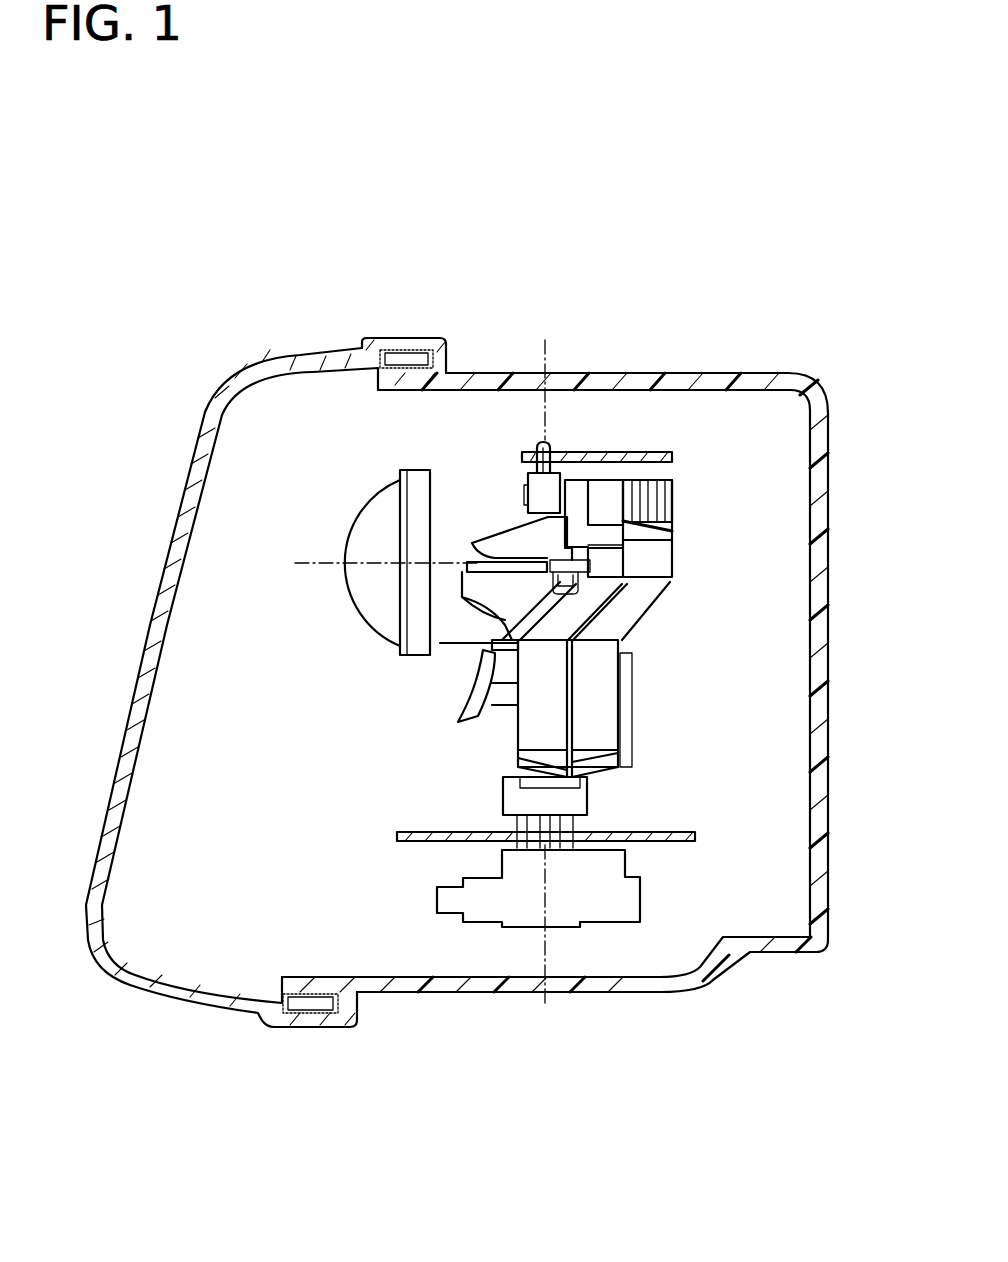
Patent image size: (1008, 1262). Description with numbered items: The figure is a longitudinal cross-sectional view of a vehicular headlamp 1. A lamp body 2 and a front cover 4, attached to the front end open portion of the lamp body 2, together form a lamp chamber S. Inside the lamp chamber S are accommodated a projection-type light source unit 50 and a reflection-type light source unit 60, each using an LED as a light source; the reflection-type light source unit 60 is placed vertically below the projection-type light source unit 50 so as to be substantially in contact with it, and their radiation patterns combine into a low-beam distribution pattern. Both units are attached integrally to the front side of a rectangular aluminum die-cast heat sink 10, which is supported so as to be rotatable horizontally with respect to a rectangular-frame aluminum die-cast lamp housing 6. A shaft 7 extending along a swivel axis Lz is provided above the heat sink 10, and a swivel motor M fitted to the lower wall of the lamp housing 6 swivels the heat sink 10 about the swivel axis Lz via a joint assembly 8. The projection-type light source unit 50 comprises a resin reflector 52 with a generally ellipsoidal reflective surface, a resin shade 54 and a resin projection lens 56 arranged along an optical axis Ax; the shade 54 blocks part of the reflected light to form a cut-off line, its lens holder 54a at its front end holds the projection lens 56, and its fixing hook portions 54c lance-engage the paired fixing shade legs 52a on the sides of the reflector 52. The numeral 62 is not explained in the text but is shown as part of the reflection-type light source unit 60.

The vehicular headlamp 1 is at (580, 262).
The lamp body 2 is at (798, 364).
The front cover 4 is at (236, 364).
The lamp housing 6 is at (595, 452).
The shaft 7 is at (554, 436).
The joint assembly 8 is at (580, 800).
The heat sink 10 is at (648, 640).
The projection-type light source unit 50 is at (463, 283).
The reflector 52 is at (510, 543).
The fixing shade leg 52a is at (590, 547).
The shade 54 is at (447, 575).
The lens holder 54a is at (418, 653).
The fixing hook portion 54c is at (590, 592).
The projection lens 56 is at (376, 492).
The reflection-type light source unit 60 is at (422, 704).
The shade 62 is at (462, 712).
The optical axis Ax is at (365, 563).
The swivel axis Lz is at (546, 691).
The swivel motor M is at (597, 913).
The lamp chamber S is at (287, 817).